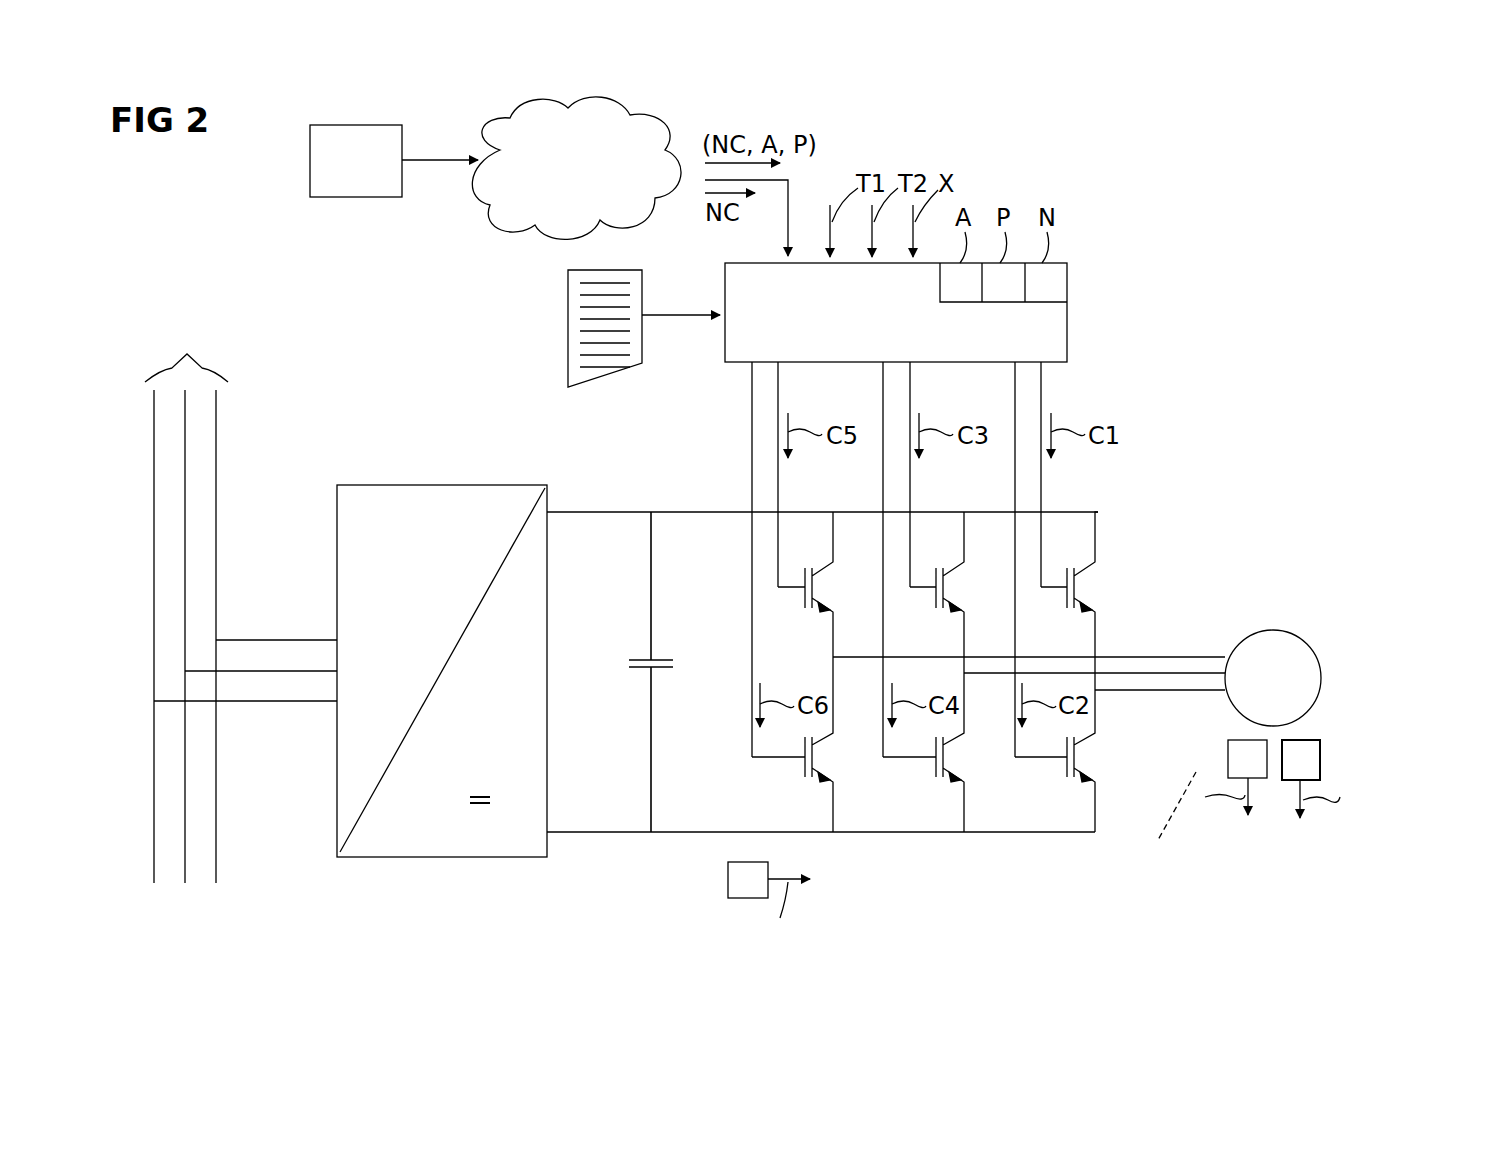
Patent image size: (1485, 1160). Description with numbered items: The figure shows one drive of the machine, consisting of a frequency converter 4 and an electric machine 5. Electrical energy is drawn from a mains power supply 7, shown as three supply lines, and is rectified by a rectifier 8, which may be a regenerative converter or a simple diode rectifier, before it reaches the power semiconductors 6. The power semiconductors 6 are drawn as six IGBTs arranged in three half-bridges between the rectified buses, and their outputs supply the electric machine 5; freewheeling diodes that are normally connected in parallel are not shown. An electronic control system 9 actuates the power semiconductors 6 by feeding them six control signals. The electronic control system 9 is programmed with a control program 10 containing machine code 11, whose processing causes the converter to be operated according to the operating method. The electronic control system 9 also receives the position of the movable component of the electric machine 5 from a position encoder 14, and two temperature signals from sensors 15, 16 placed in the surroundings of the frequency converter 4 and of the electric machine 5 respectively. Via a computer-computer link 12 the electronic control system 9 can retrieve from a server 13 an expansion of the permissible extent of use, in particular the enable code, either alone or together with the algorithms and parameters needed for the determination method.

The frequency converter 4 is at (1196, 368).
The electric machine 5 is at (1270, 630).
The power semiconductors 6 is at (820, 590).
The mains power supply 7 is at (186, 603).
The rectifier 8 is at (432, 858).
The electronic control system 9 is at (1067, 328).
The control program 10 is at (568, 290).
The machine code 11 is at (580, 310).
The computer-computer link 12 is at (485, 212).
The server 13 is at (310, 160).
The position encoder 14 is at (1228, 758).
The sensor 15 is at (728, 879).
The sensor 16 is at (1320, 760).